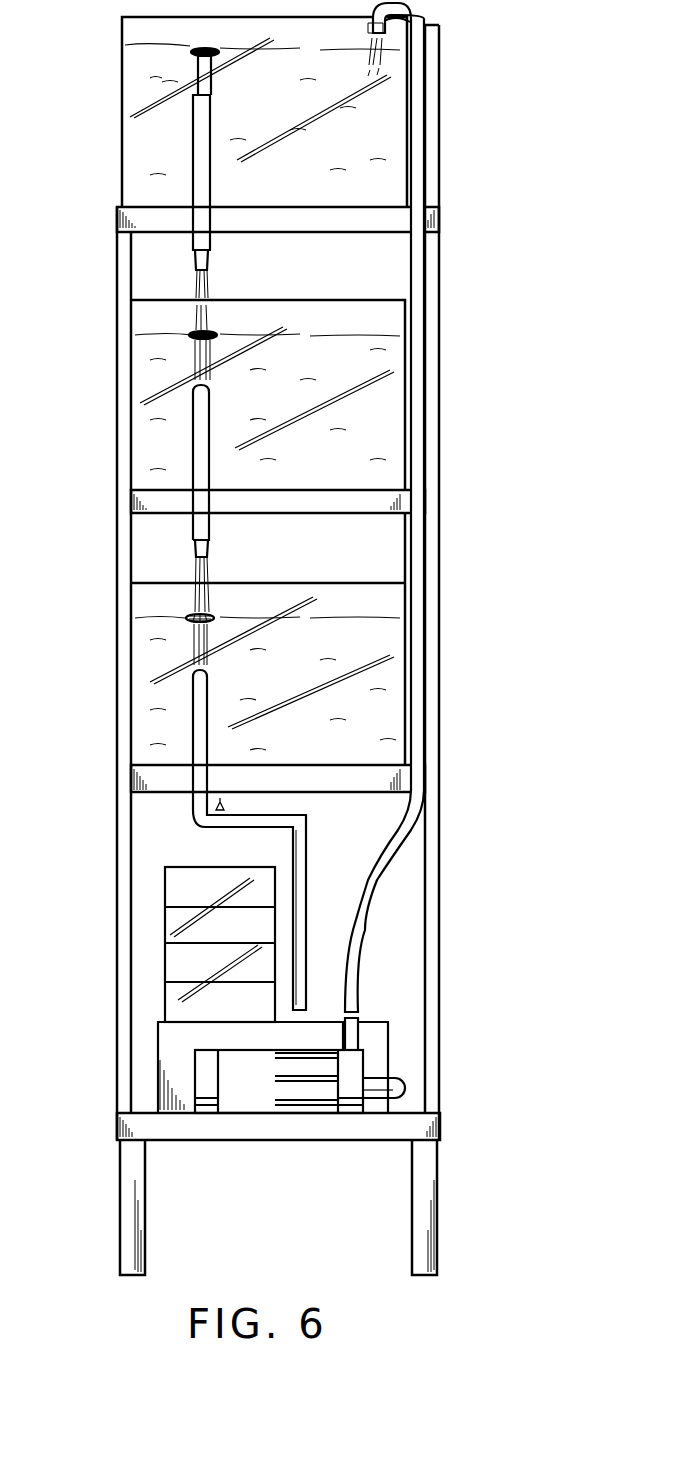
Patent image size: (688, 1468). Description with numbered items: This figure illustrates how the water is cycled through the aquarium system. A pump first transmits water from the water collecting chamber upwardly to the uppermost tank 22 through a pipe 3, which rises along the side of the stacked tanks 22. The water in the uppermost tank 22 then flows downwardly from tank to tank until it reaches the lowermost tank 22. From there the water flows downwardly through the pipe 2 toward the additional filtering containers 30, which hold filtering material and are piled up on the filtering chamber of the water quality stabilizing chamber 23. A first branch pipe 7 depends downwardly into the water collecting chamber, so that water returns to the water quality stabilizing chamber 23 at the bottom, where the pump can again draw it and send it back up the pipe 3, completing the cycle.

The tank 22 is at (135, 75).
The pipe 2 is at (200, 177).
The pipe 3 is at (413, 368).
The first branch pipe 7 is at (300, 855).
The additional filtering container 30 is at (180, 887).
The water quality stabilizing chamber 23 is at (378, 1036).